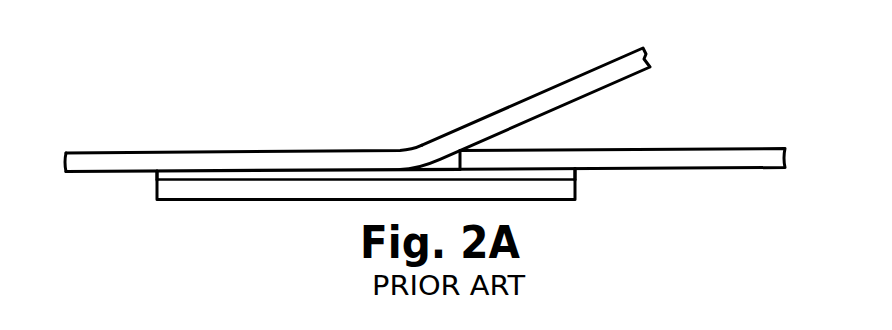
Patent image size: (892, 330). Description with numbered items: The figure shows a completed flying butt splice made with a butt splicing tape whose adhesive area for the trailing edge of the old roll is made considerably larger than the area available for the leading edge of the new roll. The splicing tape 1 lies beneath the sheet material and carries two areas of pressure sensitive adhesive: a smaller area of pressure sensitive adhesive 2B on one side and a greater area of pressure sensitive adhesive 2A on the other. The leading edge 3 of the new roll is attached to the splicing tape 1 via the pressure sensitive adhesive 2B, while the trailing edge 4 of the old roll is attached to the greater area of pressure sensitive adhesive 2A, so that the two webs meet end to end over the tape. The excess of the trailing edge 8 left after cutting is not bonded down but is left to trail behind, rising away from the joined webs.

The splicing tape 1 is at (277, 193).
The pressure sensitive adhesive 2A is at (557, 172).
The pressure sensitive adhesive 2B is at (168, 174).
The leading edge of the new roll 3 is at (657, 157).
The trailing edge of the old roll 4 is at (125, 160).
The excess of the trailing edge 8 is at (562, 97).